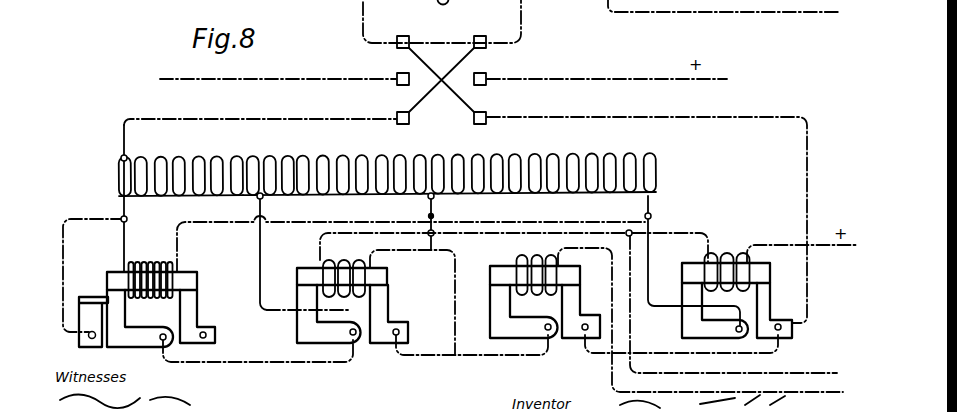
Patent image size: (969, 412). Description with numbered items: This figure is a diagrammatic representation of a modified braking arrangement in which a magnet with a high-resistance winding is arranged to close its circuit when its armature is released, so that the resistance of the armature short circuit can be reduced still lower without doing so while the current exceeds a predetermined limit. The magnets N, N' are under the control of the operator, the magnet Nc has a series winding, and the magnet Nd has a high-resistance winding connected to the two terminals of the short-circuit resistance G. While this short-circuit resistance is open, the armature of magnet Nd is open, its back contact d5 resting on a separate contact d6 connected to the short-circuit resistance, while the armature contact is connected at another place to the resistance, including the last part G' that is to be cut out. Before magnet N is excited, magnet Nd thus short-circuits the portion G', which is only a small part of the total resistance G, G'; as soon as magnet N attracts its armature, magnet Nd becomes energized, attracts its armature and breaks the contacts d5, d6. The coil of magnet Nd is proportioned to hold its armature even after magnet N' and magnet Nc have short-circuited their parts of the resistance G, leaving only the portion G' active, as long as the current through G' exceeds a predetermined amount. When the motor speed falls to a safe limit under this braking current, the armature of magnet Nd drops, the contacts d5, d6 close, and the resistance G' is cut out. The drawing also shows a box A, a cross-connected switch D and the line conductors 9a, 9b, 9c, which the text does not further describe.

The annunciator / signal box A is at (442, 21).
The pole-changing switch D is at (441, 80).
The short-circuit resistance G is at (449, 166).
The last part of the short-circuit resistance G' is at (181, 166).
The magnet N is at (737, 295).
The magnet N' is at (545, 296).
The magnet Nc is at (359, 301).
The magnet Nd is at (168, 304).
The back contact d5 is at (86, 316).
The separate contact d6 is at (86, 342).
The line conductor 9a is at (700, 328).
The line conductor 9b is at (724, 15).
The line conductor 9c is at (733, 304).